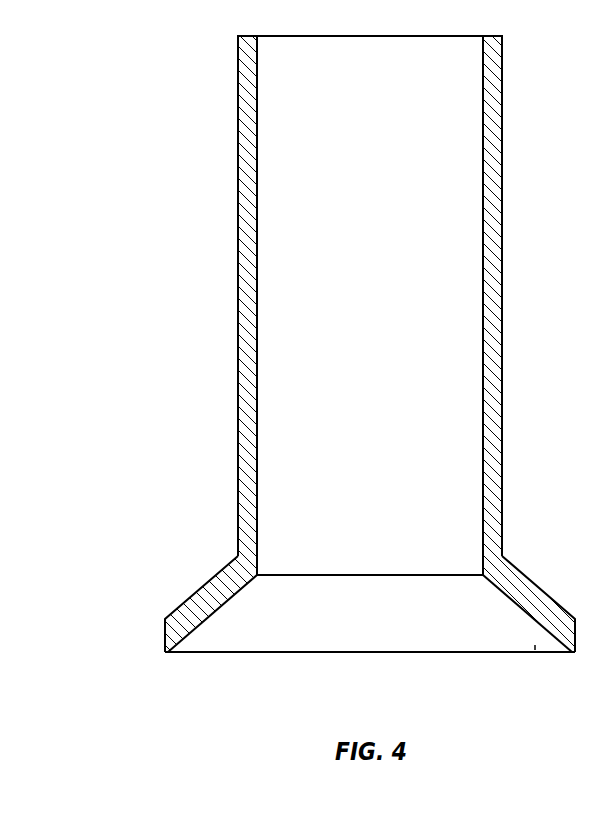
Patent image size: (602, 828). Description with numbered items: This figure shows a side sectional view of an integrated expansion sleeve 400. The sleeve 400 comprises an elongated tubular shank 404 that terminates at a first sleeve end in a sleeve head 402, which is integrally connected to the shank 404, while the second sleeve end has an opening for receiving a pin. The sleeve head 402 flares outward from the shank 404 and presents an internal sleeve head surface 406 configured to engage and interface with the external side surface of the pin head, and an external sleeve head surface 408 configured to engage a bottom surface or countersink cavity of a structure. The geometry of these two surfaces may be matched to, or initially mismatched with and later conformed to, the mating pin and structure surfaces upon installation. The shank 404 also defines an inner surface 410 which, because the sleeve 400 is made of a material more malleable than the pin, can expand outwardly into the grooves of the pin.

The integrated expansion sleeve 400 is at (130, 30).
The sleeve head 402 is at (458, 642).
The elongated tubular shank 404 is at (315, 145).
The internal sleeve head surface 406 is at (228, 603).
The external sleeve head surface 408 is at (213, 577).
The inner surface 410 is at (485, 143).